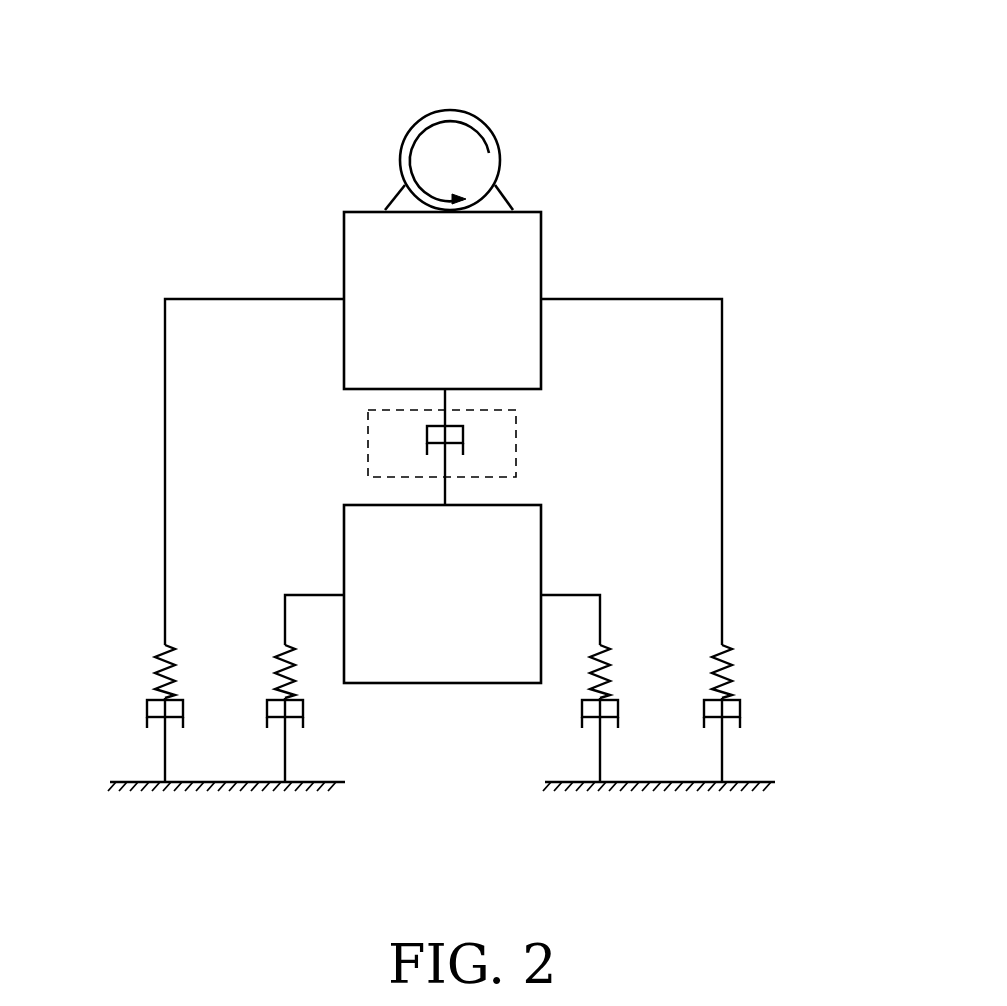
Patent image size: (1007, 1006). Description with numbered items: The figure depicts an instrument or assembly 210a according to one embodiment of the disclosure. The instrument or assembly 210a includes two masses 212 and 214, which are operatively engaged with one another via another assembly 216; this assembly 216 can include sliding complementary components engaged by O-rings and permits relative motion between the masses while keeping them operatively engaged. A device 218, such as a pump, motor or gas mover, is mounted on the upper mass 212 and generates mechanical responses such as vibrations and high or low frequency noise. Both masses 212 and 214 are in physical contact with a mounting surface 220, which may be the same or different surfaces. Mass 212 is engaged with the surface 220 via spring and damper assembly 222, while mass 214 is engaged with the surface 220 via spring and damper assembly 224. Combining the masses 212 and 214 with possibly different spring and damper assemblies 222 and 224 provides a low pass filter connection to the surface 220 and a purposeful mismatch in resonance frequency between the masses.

The instrument or assembly 210a is at (451, 437).
The mass 212 is at (520, 250).
The mass 214 is at (519, 548).
The assembly 216 is at (368, 445).
The device 218 is at (452, 112).
The mounting surface 220 is at (228, 783).
The spring and damper assembly 222 is at (150, 653).
The spring and damper assembly 224 is at (297, 677).